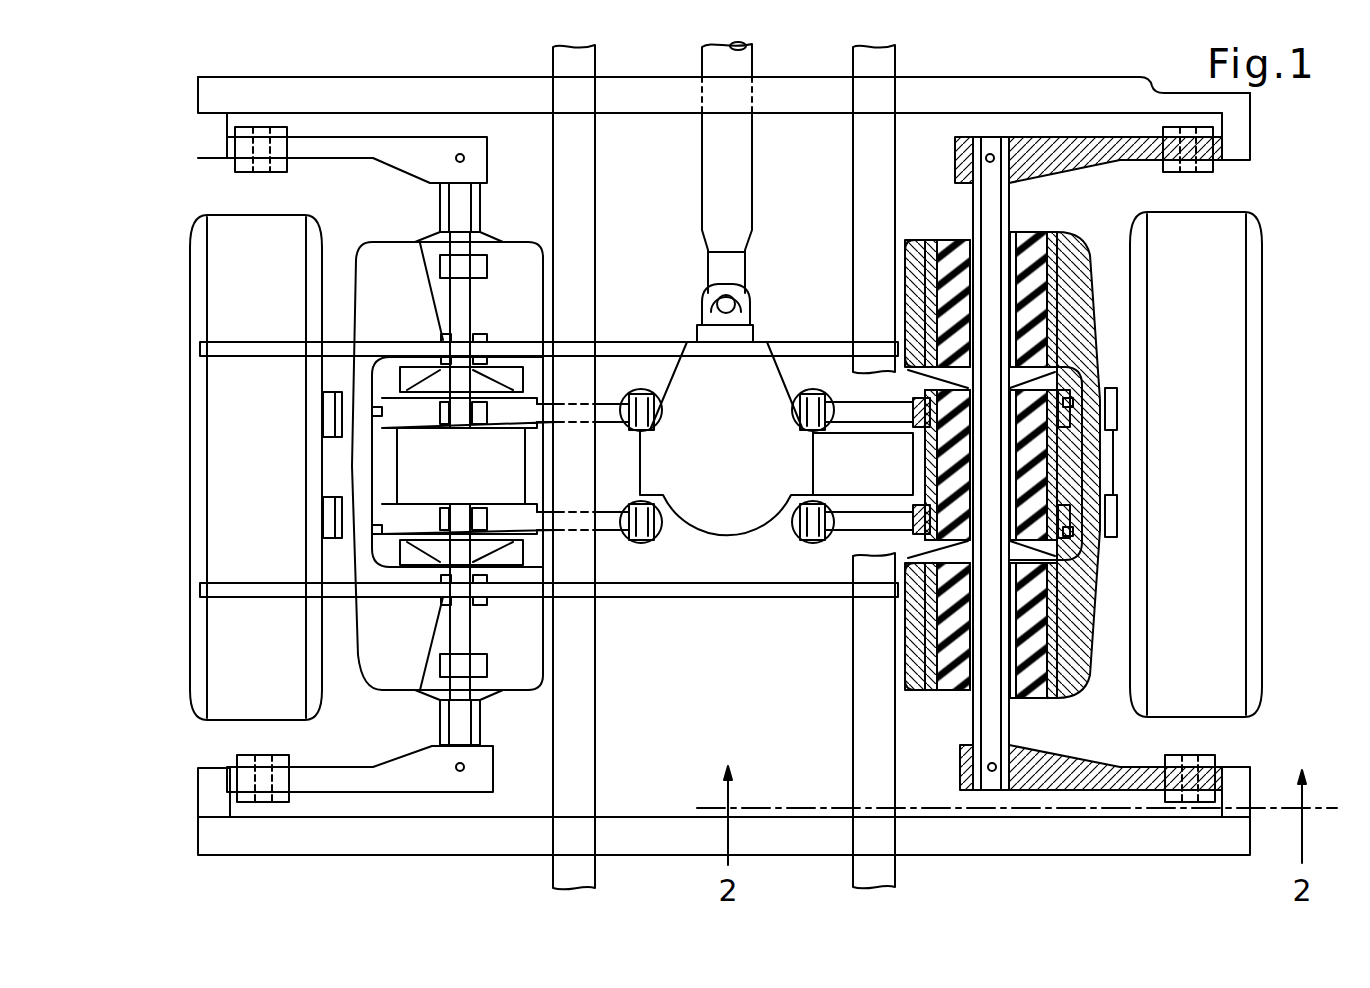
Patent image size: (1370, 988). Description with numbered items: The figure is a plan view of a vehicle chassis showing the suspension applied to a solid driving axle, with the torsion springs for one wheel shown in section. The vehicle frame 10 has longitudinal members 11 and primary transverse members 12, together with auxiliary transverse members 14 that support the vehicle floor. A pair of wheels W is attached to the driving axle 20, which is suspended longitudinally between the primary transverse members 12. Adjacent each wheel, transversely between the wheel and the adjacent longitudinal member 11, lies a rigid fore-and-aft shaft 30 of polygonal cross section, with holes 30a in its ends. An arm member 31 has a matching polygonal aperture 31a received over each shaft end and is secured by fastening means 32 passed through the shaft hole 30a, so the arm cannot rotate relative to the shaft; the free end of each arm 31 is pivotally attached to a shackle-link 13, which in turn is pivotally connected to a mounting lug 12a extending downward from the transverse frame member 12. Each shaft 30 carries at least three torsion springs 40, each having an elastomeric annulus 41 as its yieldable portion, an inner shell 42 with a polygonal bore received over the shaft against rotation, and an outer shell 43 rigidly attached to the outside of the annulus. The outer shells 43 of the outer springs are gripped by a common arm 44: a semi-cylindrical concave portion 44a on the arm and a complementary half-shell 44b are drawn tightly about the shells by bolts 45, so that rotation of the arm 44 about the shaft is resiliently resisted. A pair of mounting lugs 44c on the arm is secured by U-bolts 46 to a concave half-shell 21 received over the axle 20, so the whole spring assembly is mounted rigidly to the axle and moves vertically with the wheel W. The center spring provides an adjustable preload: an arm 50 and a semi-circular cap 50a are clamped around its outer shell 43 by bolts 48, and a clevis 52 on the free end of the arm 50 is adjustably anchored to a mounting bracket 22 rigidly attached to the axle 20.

The vehicle frame 10 is at (533, 60).
The longitudinal members 11 is at (590, 67).
The primary transverse members 12 is at (682, 103).
The mounting lug 12a is at (1243, 126).
The shackle-link 13 is at (240, 163).
The auxiliary transverse members 14 is at (606, 342).
The driving axle 20 is at (830, 470).
The concave half-shell 21 is at (340, 518).
The mounting bracket 22 is at (790, 410).
The rigid shaft 30 is at (452, 197).
The shaft holes 30a is at (988, 152).
The arm member 31 is at (1098, 152).
The polygonal aperture 31a is at (983, 174).
The fastening means 32 is at (466, 158).
The torsion springs 40 is at (555, 262).
The elastomeric annulus 41 is at (950, 437).
The inner shell 42 is at (1010, 233).
The outer shell 43 is at (1052, 240).
The common arm 44 is at (352, 478).
The semi-cylindrical concave portion 44a is at (1058, 582).
The half-shell 44b is at (935, 330).
The mounting lugs 44c is at (372, 556).
The bolts 45 is at (440, 262).
The U-bolt 46 is at (380, 410).
The bolts 48 is at (438, 522).
The arm member 50 is at (862, 415).
The semi-circular cap 50a is at (392, 420).
The clevis 52 is at (628, 368).
The wheels W is at (1264, 346).